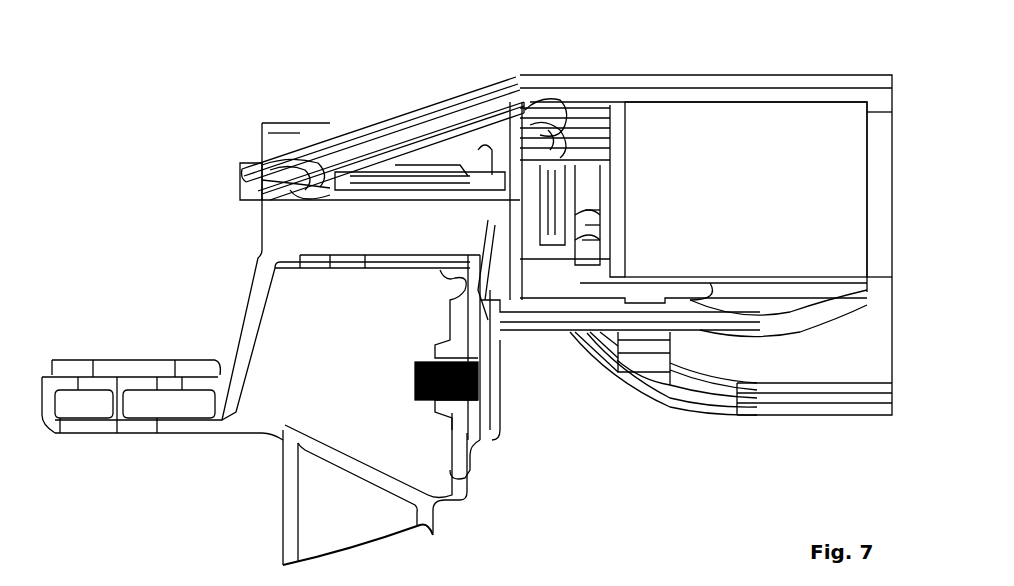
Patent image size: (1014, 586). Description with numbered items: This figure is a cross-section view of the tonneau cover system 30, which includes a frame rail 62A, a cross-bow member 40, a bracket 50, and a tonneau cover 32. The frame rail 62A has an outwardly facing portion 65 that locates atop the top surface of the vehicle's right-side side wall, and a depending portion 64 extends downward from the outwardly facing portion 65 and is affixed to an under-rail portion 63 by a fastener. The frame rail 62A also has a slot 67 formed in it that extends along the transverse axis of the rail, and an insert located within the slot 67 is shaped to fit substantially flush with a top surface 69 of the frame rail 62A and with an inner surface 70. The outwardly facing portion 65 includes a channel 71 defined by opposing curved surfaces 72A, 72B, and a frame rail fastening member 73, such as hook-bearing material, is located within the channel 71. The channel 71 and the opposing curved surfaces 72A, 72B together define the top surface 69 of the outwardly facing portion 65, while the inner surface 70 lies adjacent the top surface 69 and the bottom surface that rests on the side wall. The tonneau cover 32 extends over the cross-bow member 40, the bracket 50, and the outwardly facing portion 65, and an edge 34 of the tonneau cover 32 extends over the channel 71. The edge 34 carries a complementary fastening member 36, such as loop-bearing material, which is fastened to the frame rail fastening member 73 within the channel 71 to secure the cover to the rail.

The tonneau cover system 30 is at (228, 70).
The tonneau cover 32 is at (832, 66).
The edge 34 is at (392, 118).
The complementary fastening member 36 is at (365, 160).
The cross-bow member 40 is at (882, 198).
The bracket 50 is at (656, 110).
The frame rail 62A is at (165, 195).
The under-rail portion 63 is at (240, 325).
The depending portion 64 is at (494, 230).
The outwardly facing portion 65 is at (414, 178).
The slot 67 is at (470, 218).
The top surface 69 is at (428, 115).
The inner surface 70 is at (556, 175).
The channel 71 is at (475, 126).
The curved surface 72A is at (288, 182).
The curved surface 72B is at (540, 128).
The frame rail fastening member 73 is at (280, 182).